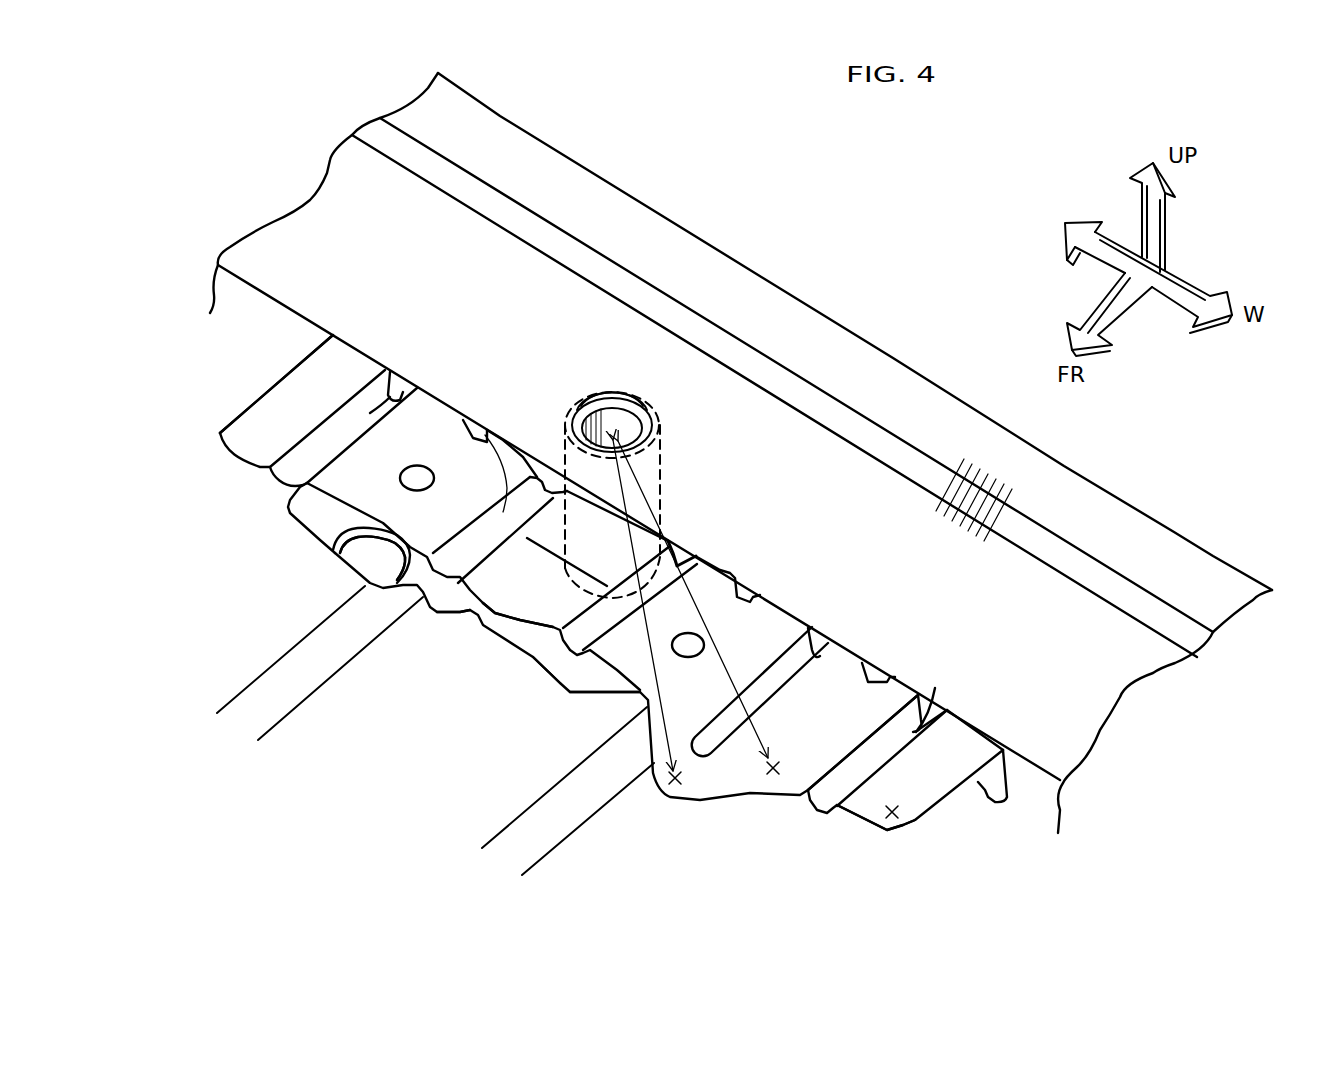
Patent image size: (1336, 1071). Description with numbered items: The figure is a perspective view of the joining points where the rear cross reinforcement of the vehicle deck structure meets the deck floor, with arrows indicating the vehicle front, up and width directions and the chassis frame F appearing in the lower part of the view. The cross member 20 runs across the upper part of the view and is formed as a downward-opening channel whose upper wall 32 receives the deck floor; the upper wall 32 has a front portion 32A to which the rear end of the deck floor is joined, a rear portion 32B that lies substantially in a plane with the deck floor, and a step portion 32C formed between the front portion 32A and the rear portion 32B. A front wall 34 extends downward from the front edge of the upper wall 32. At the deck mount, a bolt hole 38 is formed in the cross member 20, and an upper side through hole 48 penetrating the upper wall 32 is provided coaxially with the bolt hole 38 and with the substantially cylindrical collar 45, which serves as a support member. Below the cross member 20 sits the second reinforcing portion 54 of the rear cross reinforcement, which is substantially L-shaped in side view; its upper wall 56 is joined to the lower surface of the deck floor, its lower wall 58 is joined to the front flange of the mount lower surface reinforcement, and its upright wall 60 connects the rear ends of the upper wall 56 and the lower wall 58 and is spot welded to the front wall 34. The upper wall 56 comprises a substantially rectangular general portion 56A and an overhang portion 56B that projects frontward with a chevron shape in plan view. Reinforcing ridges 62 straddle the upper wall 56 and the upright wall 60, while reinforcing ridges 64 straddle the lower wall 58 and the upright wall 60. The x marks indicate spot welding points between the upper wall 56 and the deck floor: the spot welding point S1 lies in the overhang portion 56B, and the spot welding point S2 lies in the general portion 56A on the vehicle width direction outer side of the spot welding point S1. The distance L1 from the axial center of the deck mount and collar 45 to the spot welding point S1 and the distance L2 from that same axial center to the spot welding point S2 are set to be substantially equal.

The cross member 20 is at (820, 307).
The upper wall 32 is at (784, 203).
The front portion 32A is at (535, 297).
The rear portion 32B is at (702, 278).
The step portion 32C is at (610, 278).
The front wall 34 is at (283, 327).
The bolt hole 38 is at (663, 366).
The collar 45 is at (631, 432).
The upper side through hole 48 is at (613, 359).
The second reinforcing portion 54 is at (888, 843).
The upper wall 56 is at (537, 792).
The general portion 56A is at (620, 653).
The overhang portion 56B is at (640, 777).
The lower wall 58 is at (527, 598).
The upright wall 60 is at (987, 790).
The reinforcing ridges 62 is at (487, 430).
The reinforcing ridges 64 is at (467, 613).
The chassis frame F is at (544, 865).
The distance L1 is at (660, 687).
The distance L2 is at (722, 570).
The spot welding point S1 is at (689, 790).
The spot welding point S2 is at (773, 788).